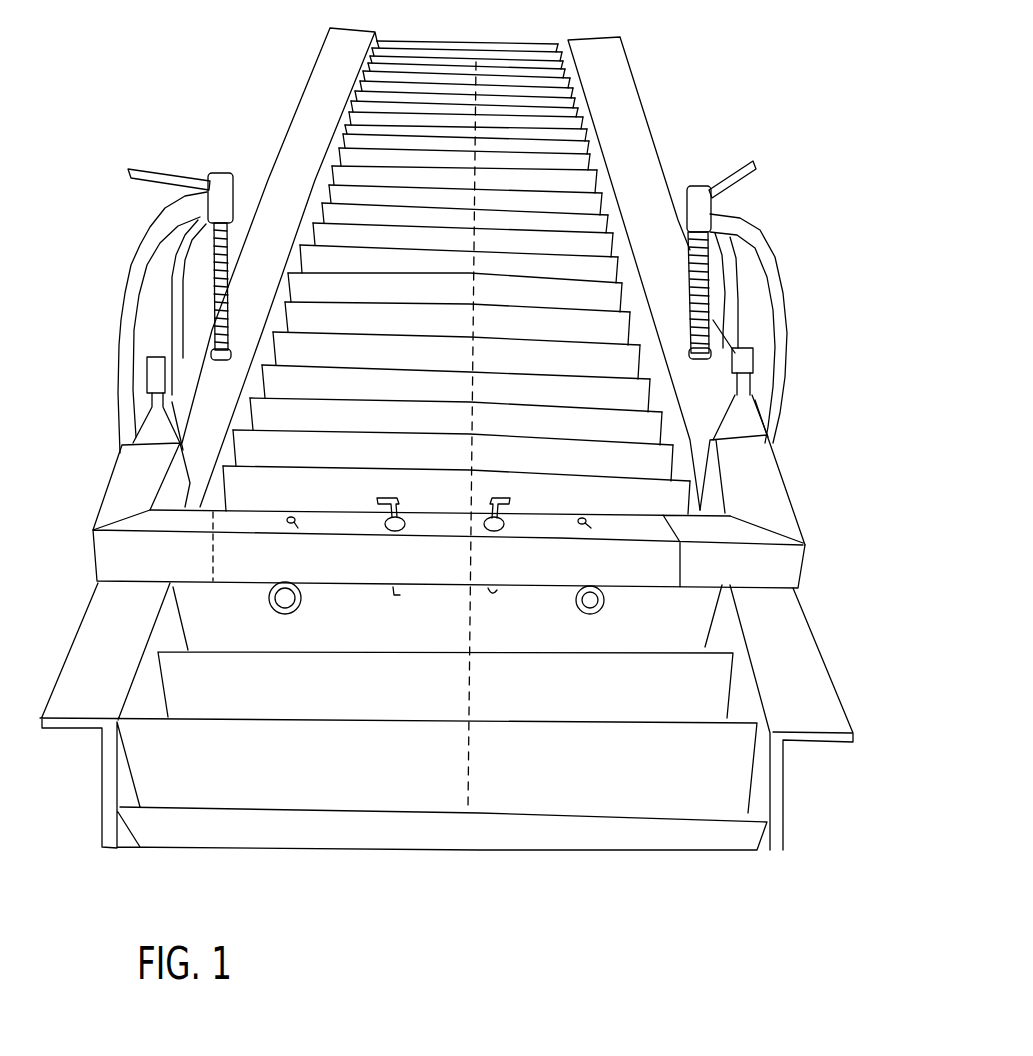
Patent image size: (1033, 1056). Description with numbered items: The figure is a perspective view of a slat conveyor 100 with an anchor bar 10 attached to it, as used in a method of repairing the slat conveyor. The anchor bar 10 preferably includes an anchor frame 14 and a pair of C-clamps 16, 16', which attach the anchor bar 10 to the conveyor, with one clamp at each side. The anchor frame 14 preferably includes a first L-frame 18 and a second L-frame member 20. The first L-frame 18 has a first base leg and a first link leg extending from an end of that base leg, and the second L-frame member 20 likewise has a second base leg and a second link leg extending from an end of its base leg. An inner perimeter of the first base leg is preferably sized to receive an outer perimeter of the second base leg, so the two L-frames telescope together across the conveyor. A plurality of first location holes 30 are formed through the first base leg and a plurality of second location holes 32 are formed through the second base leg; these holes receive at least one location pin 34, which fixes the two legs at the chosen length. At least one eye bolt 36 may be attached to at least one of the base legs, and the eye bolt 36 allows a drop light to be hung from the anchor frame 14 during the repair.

The slat conveyor 100 is at (667, 86).
The anchor bar 10 is at (105, 238).
The anchor frame 14 is at (77, 553).
The C-clamp 16 is at (199, 227).
The C-clamp 16' is at (764, 289).
The first L-frame 18 is at (93, 483).
The second L-frame member 20 is at (782, 470).
The first location holes 30 is at (297, 525).
The second location holes 32 is at (589, 526).
The location pin 34 is at (397, 590).
The eye bolt 36 is at (277, 614).